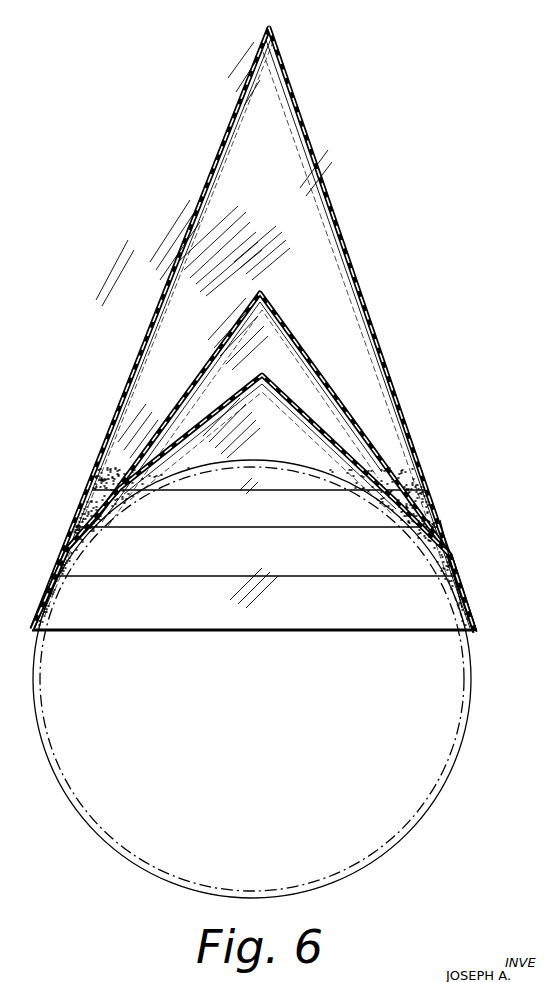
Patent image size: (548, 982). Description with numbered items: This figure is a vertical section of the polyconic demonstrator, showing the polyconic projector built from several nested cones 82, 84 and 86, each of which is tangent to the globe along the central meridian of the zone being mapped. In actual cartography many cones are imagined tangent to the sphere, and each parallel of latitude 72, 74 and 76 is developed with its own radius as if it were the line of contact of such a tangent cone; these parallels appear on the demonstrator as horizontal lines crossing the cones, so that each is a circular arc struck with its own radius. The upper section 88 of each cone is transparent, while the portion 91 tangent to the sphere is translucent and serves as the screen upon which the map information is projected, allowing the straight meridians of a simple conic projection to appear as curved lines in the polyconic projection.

The parallel of latitude 72 is at (268, 490).
The parallel of latitude 74 is at (298, 527).
The parallel of latitude 76 is at (331, 576).
The cone 82 is at (333, 441).
The cone 84 is at (386, 467).
The cone 86 is at (428, 492).
The upper section of cone 88 is at (300, 178).
The translucent portion tangent to the sphere 91 is at (452, 550).